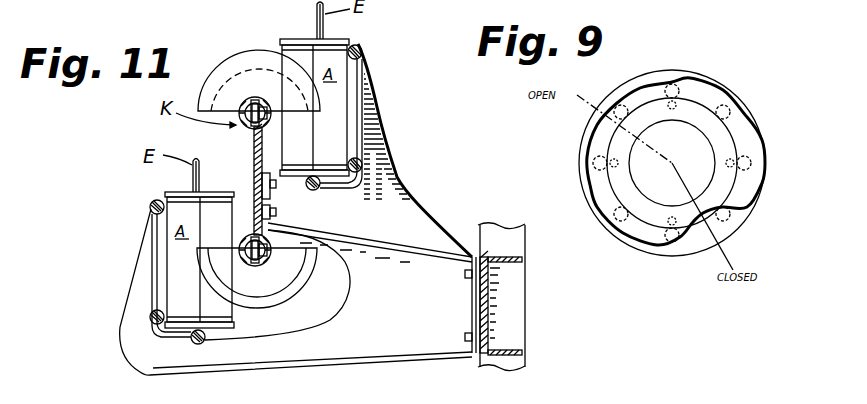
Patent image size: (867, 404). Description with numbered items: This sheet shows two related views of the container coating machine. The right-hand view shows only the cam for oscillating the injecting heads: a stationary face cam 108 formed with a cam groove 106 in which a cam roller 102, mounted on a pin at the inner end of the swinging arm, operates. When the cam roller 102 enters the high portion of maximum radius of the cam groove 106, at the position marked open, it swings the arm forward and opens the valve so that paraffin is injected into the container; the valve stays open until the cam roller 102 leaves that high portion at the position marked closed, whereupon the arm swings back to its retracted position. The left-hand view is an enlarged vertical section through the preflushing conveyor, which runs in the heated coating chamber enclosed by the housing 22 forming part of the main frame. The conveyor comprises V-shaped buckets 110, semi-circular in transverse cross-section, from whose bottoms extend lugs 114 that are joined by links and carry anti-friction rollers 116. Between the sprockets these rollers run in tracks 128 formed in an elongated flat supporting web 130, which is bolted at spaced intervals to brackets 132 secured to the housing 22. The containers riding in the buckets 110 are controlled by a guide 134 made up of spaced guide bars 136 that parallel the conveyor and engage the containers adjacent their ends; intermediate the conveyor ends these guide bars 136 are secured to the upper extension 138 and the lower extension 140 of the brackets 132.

In FIG. 11, the housing 22 is at (505, 323).
In FIG. 9, the cam roller 102 is at (622, 102).
In FIG. 9, the cam groove 106 is at (648, 83).
In FIG. 9, the stationary face cam 108 is at (723, 96).
In FIG. 11, the bucket 110 is at (227, 73).
In FIG. 11, the lug 114 is at (267, 110).
In FIG. 11, the anti-friction roller 116 is at (258, 104).
In FIG. 11, the track 128 is at (245, 126).
In FIG. 11, the supporting web 130 is at (255, 156).
In FIG. 11, the bracket 132 is at (380, 238).
In FIG. 11, the guide 134 is at (378, 73).
In FIG. 11, the guide bar 136 is at (363, 50).
In FIG. 11, the upper extension 138 is at (372, 135).
In FIG. 11, the lower extension 140 is at (122, 347).